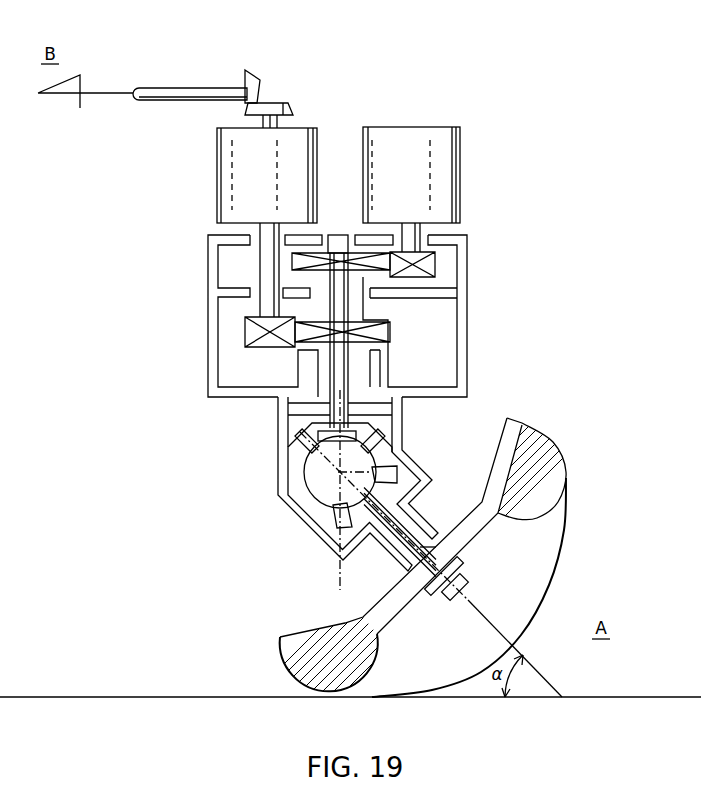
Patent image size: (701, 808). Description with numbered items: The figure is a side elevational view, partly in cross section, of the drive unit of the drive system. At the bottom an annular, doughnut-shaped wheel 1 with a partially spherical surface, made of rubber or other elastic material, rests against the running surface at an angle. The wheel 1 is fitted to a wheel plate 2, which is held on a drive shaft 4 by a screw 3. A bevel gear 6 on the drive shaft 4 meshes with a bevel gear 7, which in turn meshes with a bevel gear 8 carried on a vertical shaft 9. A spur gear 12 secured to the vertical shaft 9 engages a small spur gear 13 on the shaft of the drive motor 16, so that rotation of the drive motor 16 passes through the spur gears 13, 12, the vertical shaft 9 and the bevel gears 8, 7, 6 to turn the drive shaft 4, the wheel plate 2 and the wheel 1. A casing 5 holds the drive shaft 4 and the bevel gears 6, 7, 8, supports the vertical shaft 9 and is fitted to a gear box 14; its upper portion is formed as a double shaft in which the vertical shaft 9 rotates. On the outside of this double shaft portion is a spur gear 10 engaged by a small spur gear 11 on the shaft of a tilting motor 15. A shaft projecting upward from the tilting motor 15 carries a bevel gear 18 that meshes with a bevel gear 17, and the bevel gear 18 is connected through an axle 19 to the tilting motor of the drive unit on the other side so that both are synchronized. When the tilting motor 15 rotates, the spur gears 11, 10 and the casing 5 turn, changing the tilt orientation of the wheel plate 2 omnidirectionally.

The wheel 1 is at (342, 673).
The wheel plate 2 is at (290, 645).
The screw 3 is at (433, 597).
The drive shaft 4 is at (467, 560).
The casing 5 is at (326, 537).
The bevel gear 6 is at (333, 517).
The bevel gear 7 is at (308, 475).
The bevel gear 8 is at (297, 434).
The vertical shaft 9 is at (344, 374).
The spur gear 10 is at (380, 333).
The small spur gear 11 is at (243, 330).
The spur gear 12 is at (298, 262).
The small spur gear 13 is at (431, 263).
The gear box 14 is at (463, 337).
The tilting motor 15 is at (228, 167).
The drive motor 16 is at (453, 177).
The bevel gear 17 is at (248, 82).
The bevel gear 18 is at (285, 108).
The axle 19 is at (167, 92).